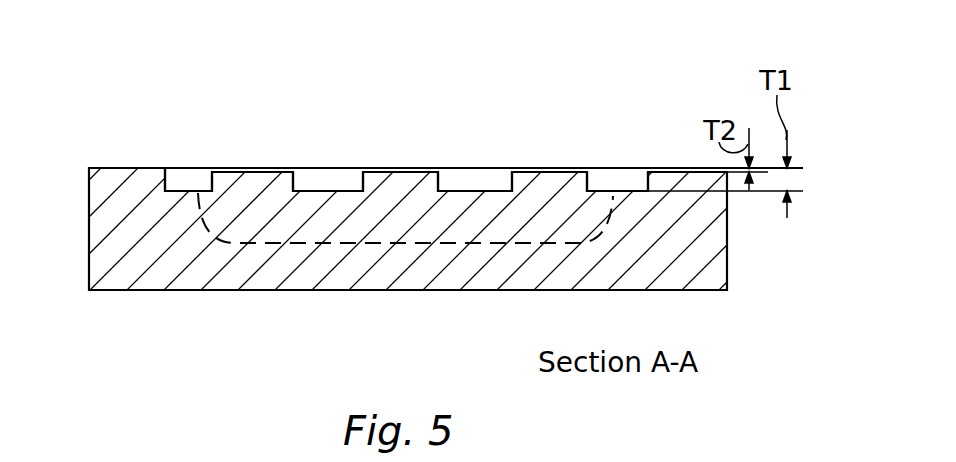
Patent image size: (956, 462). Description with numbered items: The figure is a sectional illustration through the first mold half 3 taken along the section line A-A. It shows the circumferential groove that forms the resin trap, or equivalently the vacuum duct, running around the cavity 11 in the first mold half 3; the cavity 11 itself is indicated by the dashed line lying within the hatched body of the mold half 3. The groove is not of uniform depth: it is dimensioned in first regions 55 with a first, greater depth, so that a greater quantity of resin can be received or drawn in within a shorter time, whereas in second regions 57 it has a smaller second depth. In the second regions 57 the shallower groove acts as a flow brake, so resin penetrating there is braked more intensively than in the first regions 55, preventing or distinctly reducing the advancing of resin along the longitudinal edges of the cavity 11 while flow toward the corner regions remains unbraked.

The first mold half 3 is at (127, 268).
The cavity 11 is at (276, 248).
The first regions 55 is at (187, 182).
The second regions 57 is at (256, 172).